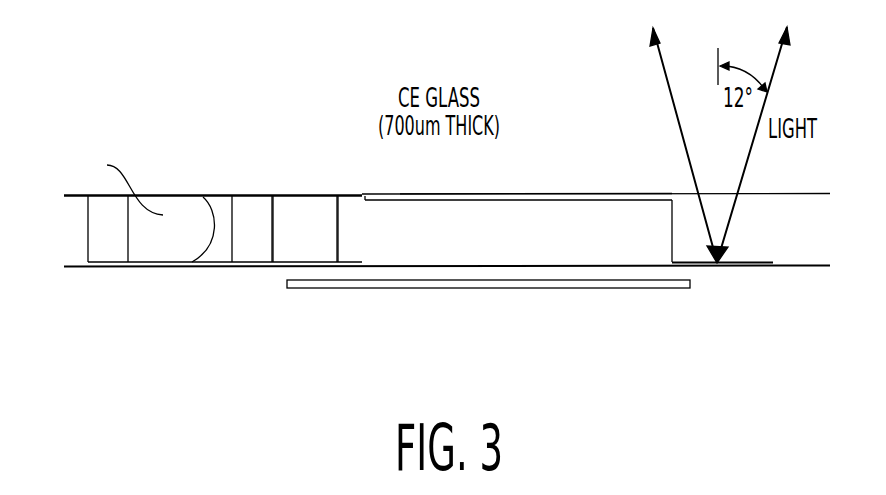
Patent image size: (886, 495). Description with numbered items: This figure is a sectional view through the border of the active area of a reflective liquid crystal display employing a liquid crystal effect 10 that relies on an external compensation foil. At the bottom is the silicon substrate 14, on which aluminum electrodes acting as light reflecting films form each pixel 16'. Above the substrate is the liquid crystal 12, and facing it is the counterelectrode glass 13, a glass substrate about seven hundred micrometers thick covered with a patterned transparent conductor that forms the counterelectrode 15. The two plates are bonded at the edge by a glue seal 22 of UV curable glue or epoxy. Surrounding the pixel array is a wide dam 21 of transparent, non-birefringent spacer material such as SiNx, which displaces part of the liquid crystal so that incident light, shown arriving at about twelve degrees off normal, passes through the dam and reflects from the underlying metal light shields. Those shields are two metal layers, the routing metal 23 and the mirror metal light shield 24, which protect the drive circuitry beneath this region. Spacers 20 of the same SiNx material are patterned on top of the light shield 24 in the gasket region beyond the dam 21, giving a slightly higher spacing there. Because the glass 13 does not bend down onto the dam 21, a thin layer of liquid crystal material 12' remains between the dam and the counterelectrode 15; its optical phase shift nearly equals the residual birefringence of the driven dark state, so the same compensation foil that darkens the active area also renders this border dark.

The liquid crystal effect 10 is at (358, 362).
The liquid crystal 12 is at (566, 198).
The thin layer of liquid crystal material 12' is at (500, 166).
The glass substrate 13 is at (521, 82).
The silicon substrate 14 is at (677, 345).
The counterelectrode 15 is at (451, 55).
The pixel 16' is at (766, 290).
The spacers 20 is at (201, 137).
The dam 21 is at (577, 217).
The glue seal 22 is at (145, 232).
The routing metal 23 is at (390, 283).
The mirror metal light shield 24 is at (167, 303).